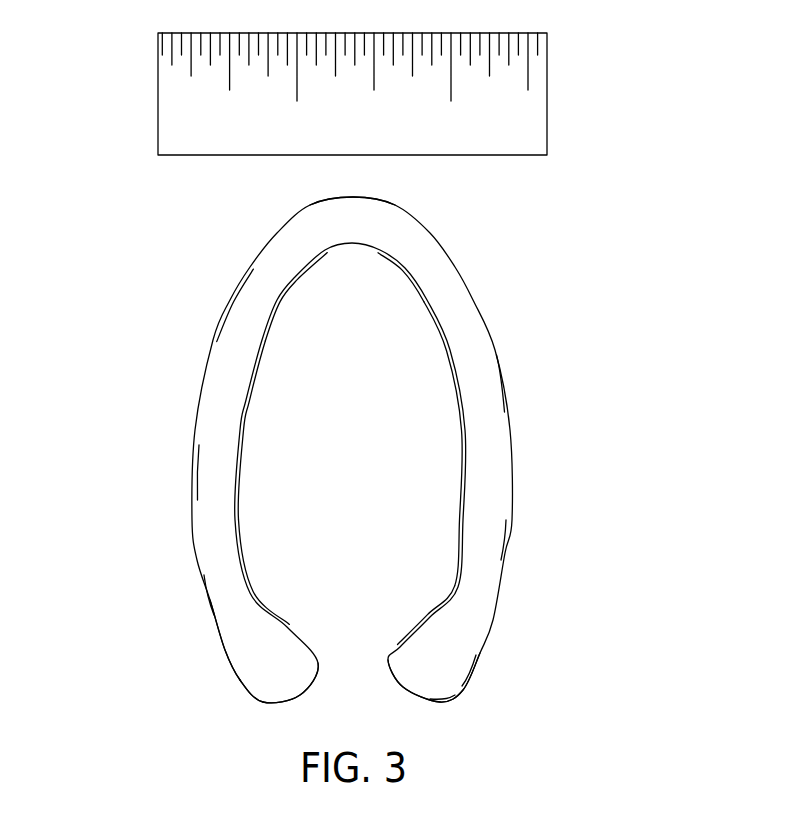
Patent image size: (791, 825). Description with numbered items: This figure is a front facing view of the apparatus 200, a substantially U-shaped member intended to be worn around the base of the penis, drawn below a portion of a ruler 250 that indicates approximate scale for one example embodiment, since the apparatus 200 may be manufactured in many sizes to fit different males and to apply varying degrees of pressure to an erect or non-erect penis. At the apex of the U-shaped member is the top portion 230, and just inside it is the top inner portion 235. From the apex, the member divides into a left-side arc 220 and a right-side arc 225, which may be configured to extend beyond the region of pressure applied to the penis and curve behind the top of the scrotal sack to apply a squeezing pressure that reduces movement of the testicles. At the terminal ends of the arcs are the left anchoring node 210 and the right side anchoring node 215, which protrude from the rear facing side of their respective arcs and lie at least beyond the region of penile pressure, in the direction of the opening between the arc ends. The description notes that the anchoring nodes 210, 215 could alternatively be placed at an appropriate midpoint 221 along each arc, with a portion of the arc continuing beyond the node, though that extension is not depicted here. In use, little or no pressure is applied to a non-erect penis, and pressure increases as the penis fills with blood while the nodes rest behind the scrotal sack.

The apparatus 200 is at (163, 281).
The left anchoring node 210 is at (447, 652).
The right side anchoring node 215 is at (263, 662).
The left-side arc 220 is at (483, 422).
The midpoint 221 is at (467, 508).
The right-side arc 225 is at (218, 437).
The top portion 230 is at (353, 198).
The top inner portion 235 is at (350, 250).
The ruler 250 is at (522, 91).